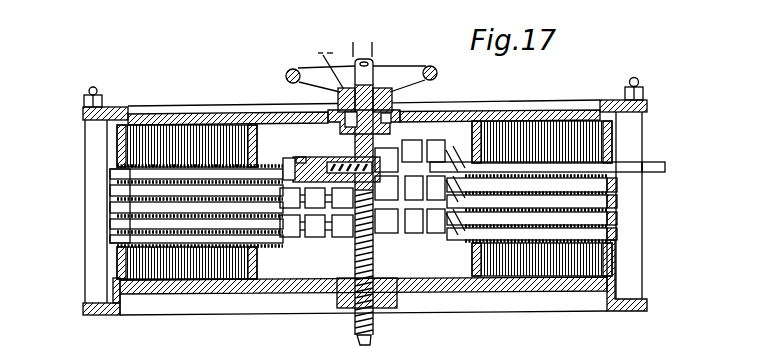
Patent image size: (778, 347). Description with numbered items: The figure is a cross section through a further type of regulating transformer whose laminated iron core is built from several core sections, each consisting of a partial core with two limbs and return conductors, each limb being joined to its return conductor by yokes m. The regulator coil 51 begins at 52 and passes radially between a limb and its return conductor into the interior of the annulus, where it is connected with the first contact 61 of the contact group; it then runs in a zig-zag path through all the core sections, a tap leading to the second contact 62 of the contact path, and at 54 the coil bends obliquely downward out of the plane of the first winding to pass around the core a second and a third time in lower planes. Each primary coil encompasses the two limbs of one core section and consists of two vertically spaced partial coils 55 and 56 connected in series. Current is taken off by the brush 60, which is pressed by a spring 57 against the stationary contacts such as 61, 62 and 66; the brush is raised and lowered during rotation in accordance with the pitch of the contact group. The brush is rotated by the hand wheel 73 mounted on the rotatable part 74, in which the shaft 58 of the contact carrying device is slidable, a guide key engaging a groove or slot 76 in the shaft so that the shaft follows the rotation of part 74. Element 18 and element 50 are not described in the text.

The yokes m is at (201, 135).
The regulator coil 51 is at (112, 172).
The contact plate / conductor 18 is at (112, 192).
The beginning of the regulator coil 52 is at (648, 167).
The oblique bend of the regulator coil 54 is at (617, 178).
The partial coil 55 is at (172, 192).
The partial coil 56 is at (166, 282).
The threaded spindle 50 is at (375, 317).
The groove or slot 76 is at (360, 90).
The shaft 58 is at (374, 92).
The hand wheel 73 is at (406, 70).
The rotatable part 74 is at (385, 112).
The spring 57 is at (333, 162).
The brush 60 is at (300, 158).
The contact 66 is at (288, 168).
The second contact 62 is at (418, 148).
The first contact 61 is at (440, 152).